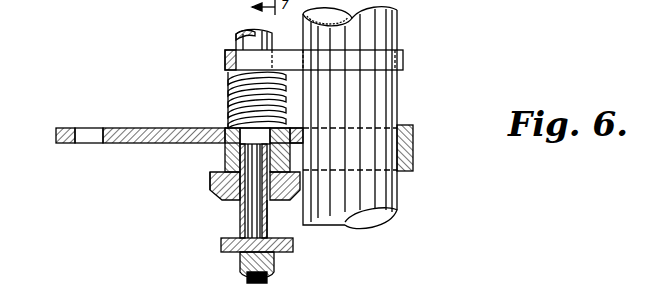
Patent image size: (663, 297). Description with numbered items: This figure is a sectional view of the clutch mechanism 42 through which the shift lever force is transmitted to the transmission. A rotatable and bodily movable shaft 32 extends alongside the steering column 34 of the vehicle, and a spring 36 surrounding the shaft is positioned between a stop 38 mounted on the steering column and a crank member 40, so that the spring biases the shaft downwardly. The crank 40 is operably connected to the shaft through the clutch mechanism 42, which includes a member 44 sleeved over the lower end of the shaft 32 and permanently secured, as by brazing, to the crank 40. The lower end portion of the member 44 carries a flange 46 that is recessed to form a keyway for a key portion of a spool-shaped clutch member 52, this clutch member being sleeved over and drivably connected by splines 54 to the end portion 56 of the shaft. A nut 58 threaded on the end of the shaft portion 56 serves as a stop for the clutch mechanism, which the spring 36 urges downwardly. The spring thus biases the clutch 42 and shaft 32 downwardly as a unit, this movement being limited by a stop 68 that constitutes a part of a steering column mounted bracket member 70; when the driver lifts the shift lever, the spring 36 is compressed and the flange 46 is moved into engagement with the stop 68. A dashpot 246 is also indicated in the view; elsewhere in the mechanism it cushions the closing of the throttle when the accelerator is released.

The shaft 32 is at (236, 34).
The steering column 34 is at (397, 199).
The spring 36 is at (228, 91).
The stop 38 is at (393, 52).
The crank member 40 is at (127, 128).
The clutch mechanism 42 is at (212, 196).
The member 44 is at (226, 145).
The flange 46 is at (212, 180).
The clutch member 52 is at (236, 208).
The splines 54 is at (226, 129).
The end portion 56 is at (280, 250).
The nut 58 is at (248, 278).
The stop 68 is at (270, 205).
The bracket member 70 is at (412, 132).
The dashpot 246 is at (232, 252).